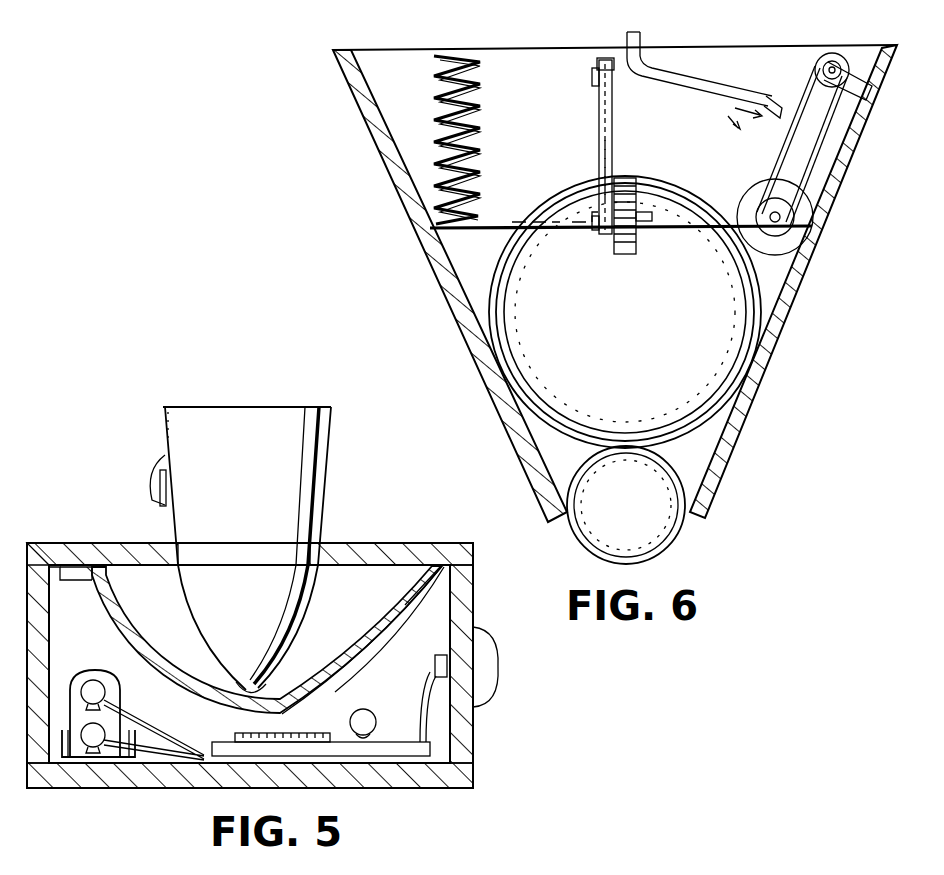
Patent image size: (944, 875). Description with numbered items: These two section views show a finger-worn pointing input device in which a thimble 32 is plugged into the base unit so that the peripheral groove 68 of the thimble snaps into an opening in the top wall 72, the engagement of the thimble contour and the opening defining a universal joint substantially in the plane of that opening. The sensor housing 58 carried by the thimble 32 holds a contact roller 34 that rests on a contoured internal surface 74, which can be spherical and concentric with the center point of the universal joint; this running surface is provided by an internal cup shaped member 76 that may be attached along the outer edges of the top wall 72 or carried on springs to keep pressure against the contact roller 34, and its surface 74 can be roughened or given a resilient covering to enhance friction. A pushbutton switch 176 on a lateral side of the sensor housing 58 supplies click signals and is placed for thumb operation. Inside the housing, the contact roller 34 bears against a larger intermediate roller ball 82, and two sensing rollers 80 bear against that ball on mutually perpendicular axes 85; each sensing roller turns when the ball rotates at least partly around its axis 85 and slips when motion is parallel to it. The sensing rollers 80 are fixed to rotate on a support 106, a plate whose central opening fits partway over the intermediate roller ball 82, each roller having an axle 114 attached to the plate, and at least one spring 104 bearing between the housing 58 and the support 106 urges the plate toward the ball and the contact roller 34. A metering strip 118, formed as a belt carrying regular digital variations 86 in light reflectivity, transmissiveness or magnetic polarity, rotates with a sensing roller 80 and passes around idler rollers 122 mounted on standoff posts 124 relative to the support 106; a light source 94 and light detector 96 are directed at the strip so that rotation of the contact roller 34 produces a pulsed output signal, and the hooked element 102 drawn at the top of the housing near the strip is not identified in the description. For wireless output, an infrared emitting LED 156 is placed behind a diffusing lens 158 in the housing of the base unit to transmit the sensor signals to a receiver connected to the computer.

In FIG. 5, the thimble 32 is at (292, 418).
In FIG. 6, the contact roller 34 is at (662, 536).
In FIG. 5, the contact roller 34 is at (240, 676).
In FIG. 6, the sensor housing 58 is at (478, 345).
In FIG. 5, the sensor housing 58 is at (196, 600).
In FIG. 5, the peripheral groove 68 is at (247, 543).
In FIG. 5, the top wall 72 is at (362, 543).
In FIG. 5, the contoured internal surface 74 is at (366, 648).
In FIG. 5, the cup shaped member 76 is at (398, 622).
In FIG. 6, the sensing roller 80 is at (630, 178).
In FIG. 6, the intermediate roller ball 82 is at (750, 320).
In FIG. 6, the axis 85 is at (560, 216).
In FIG. 6, the digital variations 86 is at (600, 150).
In FIG. 6, the light source 94 is at (728, 116).
In FIG. 6, the light detector 96 is at (733, 104).
In FIG. 6, the tube 102 is at (704, 66).
In FIG. 6, the spring 104 is at (436, 70).
In FIG. 6, the support 106 is at (498, 232).
In FIG. 6, the axle 114 is at (780, 216).
In FIG. 6, the metering strip 118 is at (598, 112).
In FIG. 6, the idler roller 122 is at (597, 66).
In FIG. 6, the standoff post 124 is at (866, 96).
In FIG. 5, the infrared emitting LED 156 is at (434, 664).
In FIG. 5, the diffusing lens 158 is at (482, 698).
In FIG. 5, the pushbutton switch 176 is at (156, 485).